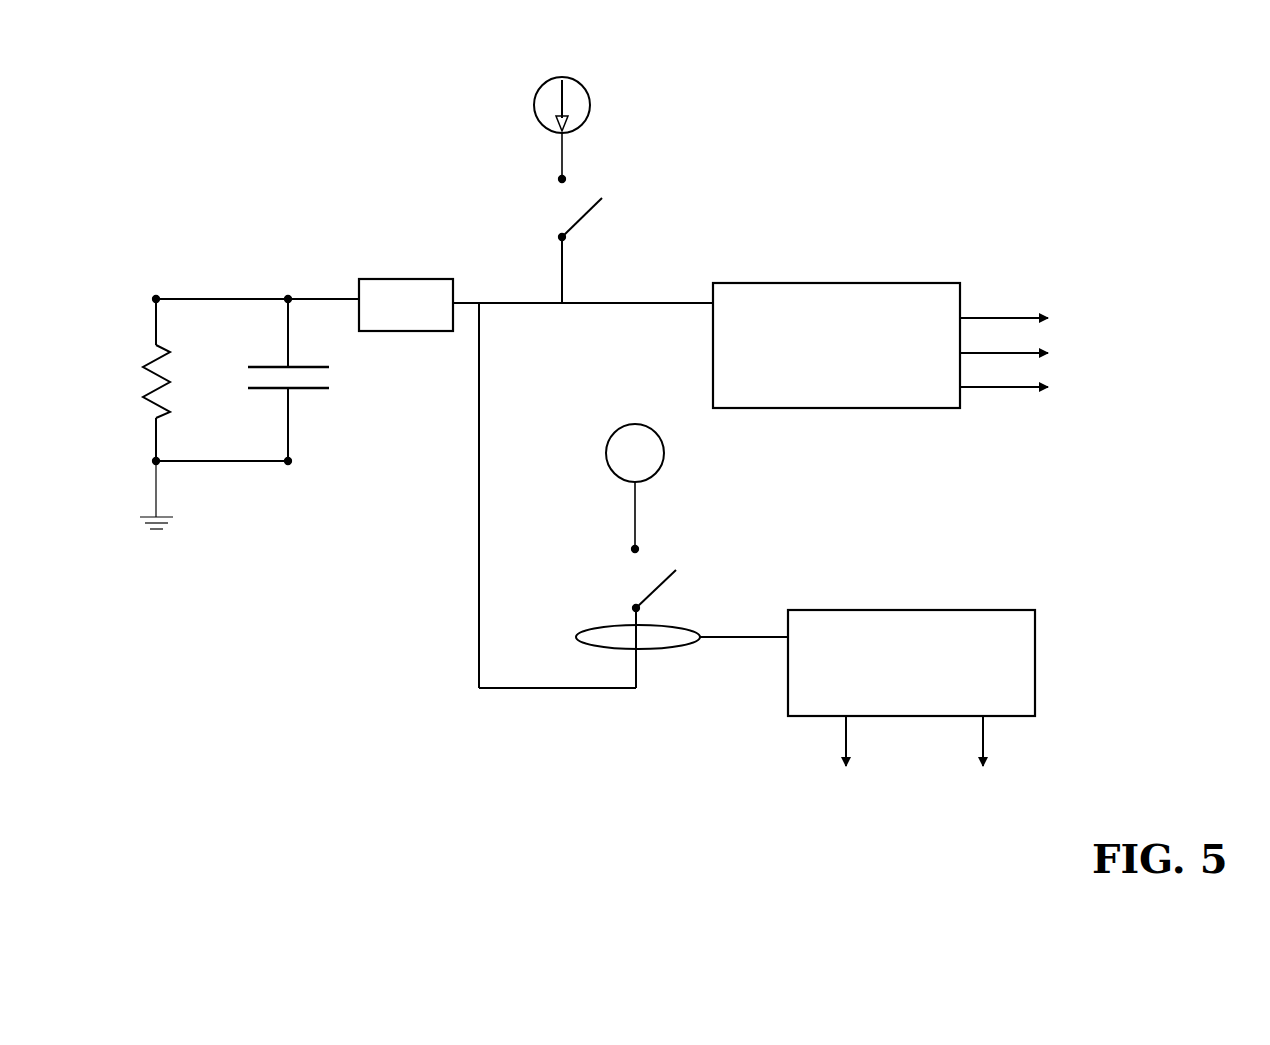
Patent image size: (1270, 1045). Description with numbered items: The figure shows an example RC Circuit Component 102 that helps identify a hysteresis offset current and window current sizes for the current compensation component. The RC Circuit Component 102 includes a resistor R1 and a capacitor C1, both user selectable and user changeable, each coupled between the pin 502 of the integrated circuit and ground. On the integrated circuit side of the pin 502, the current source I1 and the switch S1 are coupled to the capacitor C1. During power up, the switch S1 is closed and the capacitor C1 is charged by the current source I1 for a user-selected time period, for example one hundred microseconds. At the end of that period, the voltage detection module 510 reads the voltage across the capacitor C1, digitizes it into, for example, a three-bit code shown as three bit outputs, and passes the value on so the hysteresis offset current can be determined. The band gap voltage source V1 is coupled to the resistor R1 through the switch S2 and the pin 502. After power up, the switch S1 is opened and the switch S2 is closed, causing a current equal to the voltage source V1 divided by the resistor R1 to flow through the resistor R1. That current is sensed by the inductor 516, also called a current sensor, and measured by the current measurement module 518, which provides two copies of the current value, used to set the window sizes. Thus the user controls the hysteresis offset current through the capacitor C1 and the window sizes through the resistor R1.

The RC Circuit Component 102 is at (1140, 86).
The pin 502 is at (415, 279).
The voltage detection module 510 is at (892, 283).
The inductor 516 is at (574, 620).
The current measurement module 518 is at (987, 610).
The resistor R1 is at (157, 346).
The capacitor C1 is at (313, 390).
The current source I1 is at (584, 78).
The switch S1 is at (629, 168).
The band gap voltage source V1 is at (619, 488).
The switch S2 is at (624, 572).